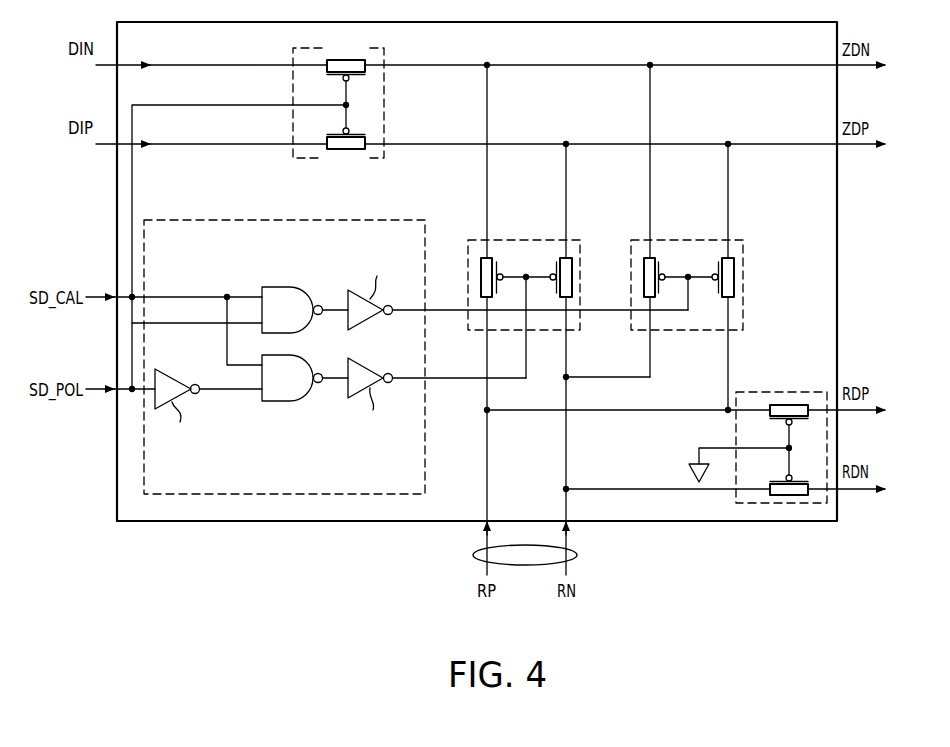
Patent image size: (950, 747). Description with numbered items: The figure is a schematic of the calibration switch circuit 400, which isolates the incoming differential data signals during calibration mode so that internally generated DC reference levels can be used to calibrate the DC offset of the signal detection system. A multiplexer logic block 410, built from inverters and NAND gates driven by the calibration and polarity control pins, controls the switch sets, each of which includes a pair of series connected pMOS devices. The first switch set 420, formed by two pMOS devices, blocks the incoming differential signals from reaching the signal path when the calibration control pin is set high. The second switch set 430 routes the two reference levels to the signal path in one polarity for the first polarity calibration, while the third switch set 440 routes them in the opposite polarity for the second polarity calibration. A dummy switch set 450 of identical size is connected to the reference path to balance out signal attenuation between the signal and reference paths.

The calibration switch circuit 400 is at (833, 574).
The multiplexer logic block 410 is at (412, 483).
The first switch set 420 is at (378, 57).
The second switch set 430 is at (517, 247).
The third switch set 440 is at (677, 247).
The dummy switch set 450 is at (762, 396).